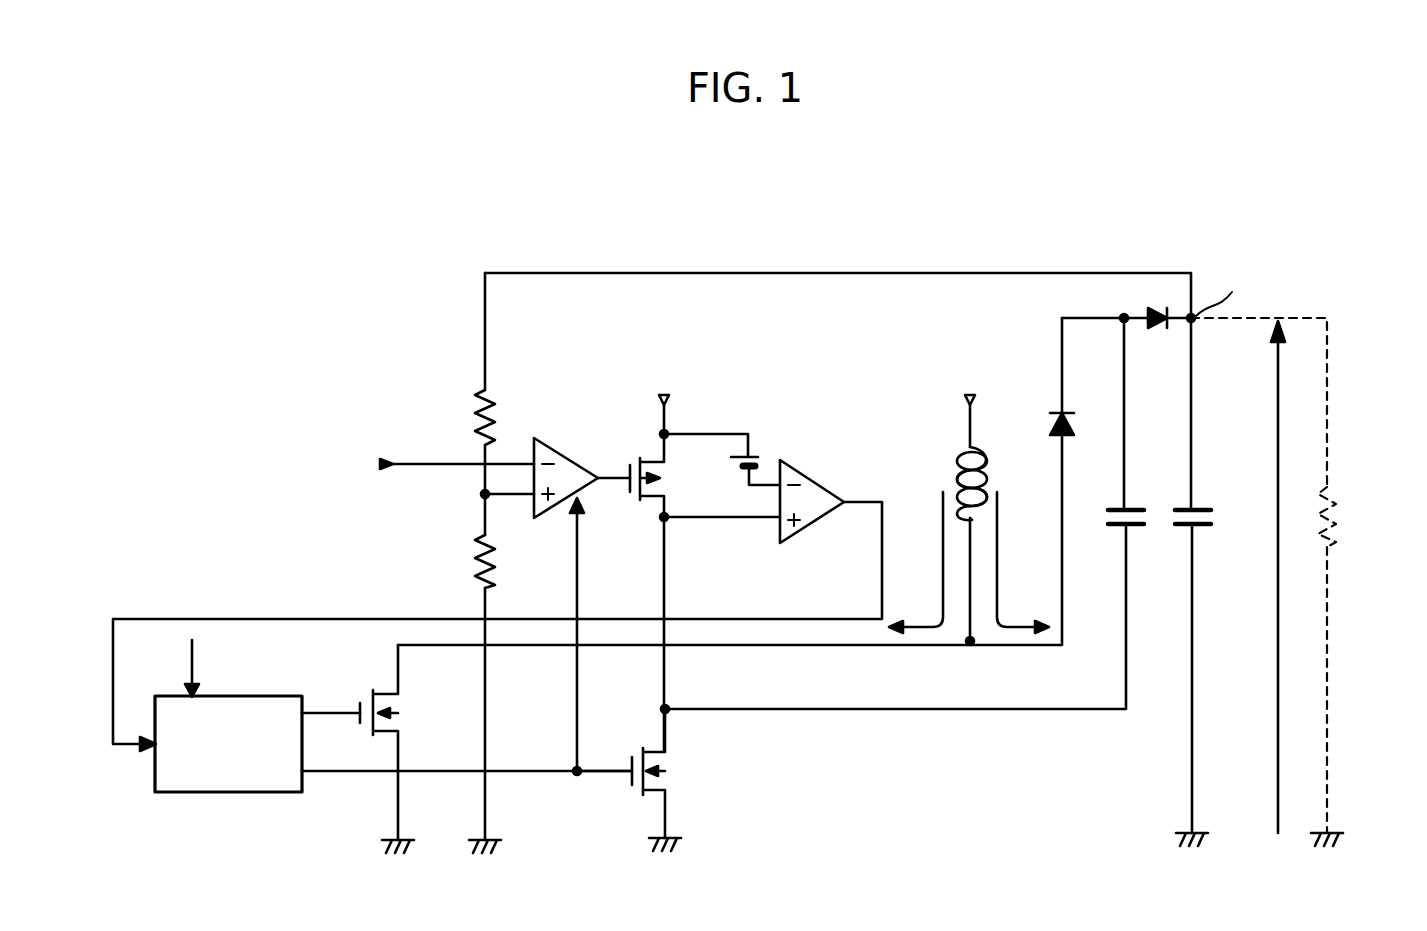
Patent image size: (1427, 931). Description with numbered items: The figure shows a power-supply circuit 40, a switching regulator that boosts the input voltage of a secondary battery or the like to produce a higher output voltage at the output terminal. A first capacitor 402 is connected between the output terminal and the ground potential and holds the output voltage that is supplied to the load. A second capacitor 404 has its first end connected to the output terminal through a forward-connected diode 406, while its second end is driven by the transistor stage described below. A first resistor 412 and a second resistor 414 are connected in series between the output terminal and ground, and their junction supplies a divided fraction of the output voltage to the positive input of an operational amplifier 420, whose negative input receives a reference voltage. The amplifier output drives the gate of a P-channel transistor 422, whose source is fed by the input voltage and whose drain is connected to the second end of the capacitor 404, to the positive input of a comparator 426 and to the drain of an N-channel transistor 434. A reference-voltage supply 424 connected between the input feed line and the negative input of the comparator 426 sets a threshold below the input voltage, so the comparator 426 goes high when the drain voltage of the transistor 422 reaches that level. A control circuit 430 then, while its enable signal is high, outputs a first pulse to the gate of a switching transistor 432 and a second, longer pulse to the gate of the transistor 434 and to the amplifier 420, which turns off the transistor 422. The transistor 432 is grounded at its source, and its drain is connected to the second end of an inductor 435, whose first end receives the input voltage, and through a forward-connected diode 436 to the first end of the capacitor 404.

The power-supply circuit 40 is at (696, 222).
The capacitor (first holding device) 402 is at (1198, 528).
The capacitor (second holding device) 404 is at (1130, 528).
The diode 406 is at (1158, 332).
The resistor 412 is at (482, 395).
The resistor 414 is at (482, 545).
The operational amplifier 420 is at (572, 460).
The P-channel-type transistor (first transistor) 422 is at (643, 506).
The reference-voltage supply 424 is at (760, 455).
The comparator (threshold determiner) 426 is at (818, 480).
The control circuit 430 is at (232, 695).
The N-channel-type transistor (switch) 432 is at (378, 692).
The N-channel-type transistor (second transistor) 434 is at (648, 750).
The inductor 435 is at (962, 462).
The diode 436 is at (1066, 412).